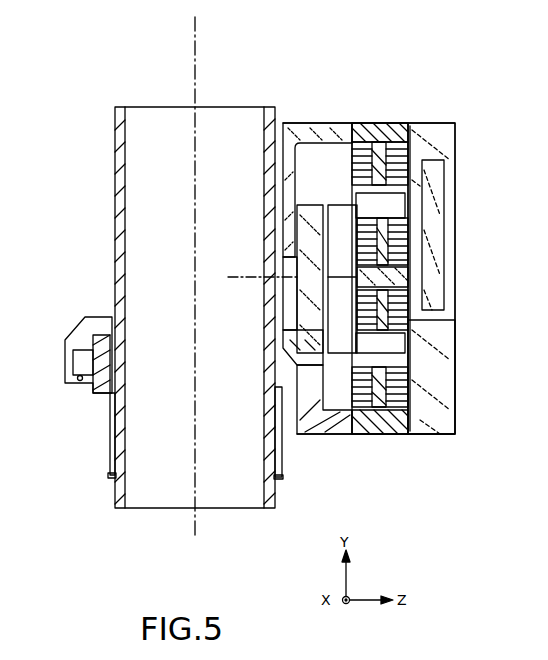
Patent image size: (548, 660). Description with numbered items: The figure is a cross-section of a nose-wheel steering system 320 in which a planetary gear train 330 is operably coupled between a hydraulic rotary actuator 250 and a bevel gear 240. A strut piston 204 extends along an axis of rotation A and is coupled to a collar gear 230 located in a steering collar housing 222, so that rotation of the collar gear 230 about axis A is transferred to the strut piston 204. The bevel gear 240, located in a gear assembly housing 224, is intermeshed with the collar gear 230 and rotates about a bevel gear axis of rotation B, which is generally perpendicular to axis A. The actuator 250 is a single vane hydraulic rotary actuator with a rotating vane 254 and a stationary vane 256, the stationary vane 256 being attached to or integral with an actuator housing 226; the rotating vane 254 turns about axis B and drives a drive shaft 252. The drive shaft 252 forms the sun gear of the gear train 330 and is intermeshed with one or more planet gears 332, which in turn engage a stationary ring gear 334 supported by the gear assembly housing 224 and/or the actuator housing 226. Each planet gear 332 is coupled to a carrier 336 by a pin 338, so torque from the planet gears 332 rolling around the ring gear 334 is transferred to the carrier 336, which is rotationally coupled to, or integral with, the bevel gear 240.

The axis of rotation A is at (195, 76).
The bevel gear axis of rotation B is at (237, 277).
The strut piston 204 is at (115, 135).
The steering collar housing 222 is at (105, 323).
The gear assembly housing 224 is at (318, 124).
The actuator housing 226 is at (445, 138).
The collar gear 230 is at (295, 350).
The bevel gear 240 is at (297, 320).
The actuator 250 is at (455, 443).
The drive shaft 252 is at (390, 278).
The rotating vane 254 is at (440, 203).
The stationary vane 256 is at (437, 338).
The nose-wheel steering system 320 is at (466, 100).
The gear train 330 is at (408, 443).
The planet gear 332 is at (395, 250).
The ring gear 334 is at (360, 124).
The carrier 336 is at (300, 205).
The pin 338 is at (372, 205).